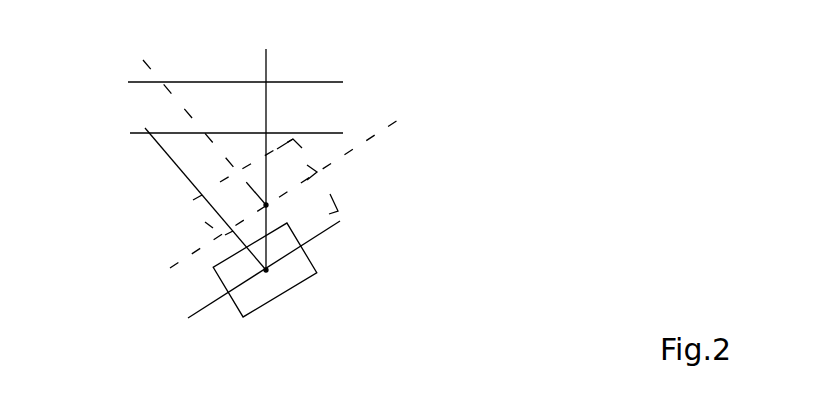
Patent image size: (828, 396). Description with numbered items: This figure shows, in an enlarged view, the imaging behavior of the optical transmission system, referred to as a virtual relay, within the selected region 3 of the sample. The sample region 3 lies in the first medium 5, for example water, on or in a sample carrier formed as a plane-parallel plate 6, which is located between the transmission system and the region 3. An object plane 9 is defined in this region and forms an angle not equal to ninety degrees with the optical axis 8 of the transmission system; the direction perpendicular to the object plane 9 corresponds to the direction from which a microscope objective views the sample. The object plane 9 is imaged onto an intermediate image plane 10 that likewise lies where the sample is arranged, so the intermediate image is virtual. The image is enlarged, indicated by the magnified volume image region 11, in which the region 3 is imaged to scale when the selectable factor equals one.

The region of the sample 3 is at (278, 287).
The first medium 5 is at (148, 225).
The plane-parallel plate 6 is at (335, 105).
The optical axis 8 is at (266, 63).
The object plane 9 is at (337, 222).
The intermediate image plane 10 is at (167, 277).
The volume image region 11 is at (328, 198).